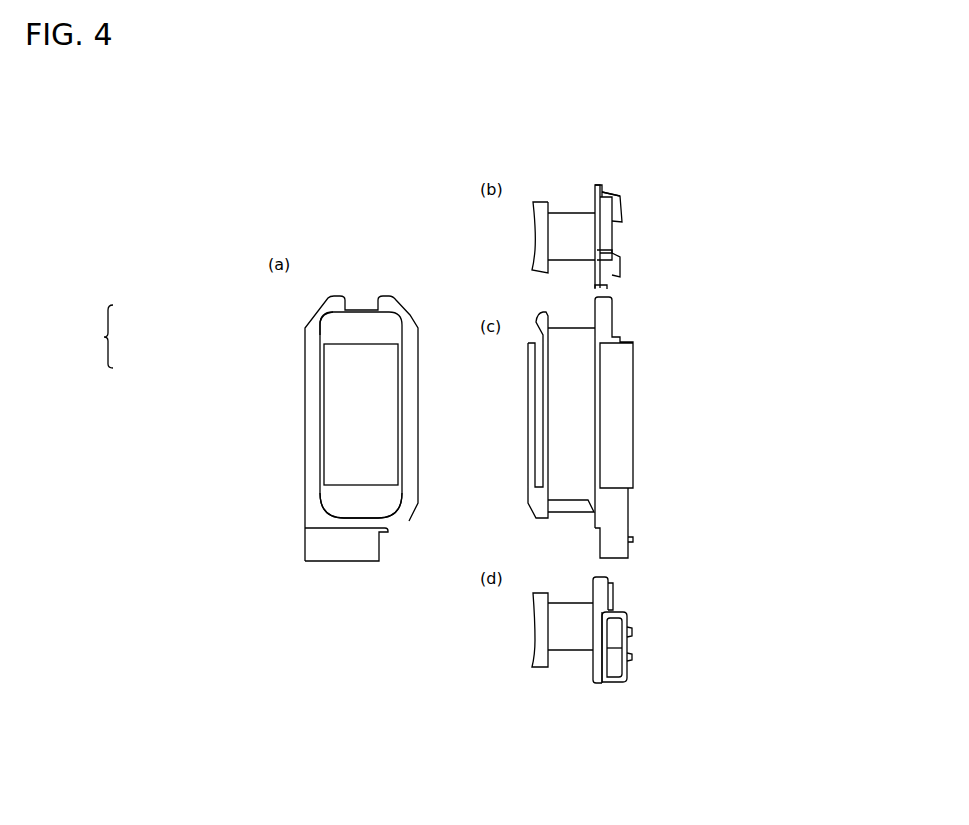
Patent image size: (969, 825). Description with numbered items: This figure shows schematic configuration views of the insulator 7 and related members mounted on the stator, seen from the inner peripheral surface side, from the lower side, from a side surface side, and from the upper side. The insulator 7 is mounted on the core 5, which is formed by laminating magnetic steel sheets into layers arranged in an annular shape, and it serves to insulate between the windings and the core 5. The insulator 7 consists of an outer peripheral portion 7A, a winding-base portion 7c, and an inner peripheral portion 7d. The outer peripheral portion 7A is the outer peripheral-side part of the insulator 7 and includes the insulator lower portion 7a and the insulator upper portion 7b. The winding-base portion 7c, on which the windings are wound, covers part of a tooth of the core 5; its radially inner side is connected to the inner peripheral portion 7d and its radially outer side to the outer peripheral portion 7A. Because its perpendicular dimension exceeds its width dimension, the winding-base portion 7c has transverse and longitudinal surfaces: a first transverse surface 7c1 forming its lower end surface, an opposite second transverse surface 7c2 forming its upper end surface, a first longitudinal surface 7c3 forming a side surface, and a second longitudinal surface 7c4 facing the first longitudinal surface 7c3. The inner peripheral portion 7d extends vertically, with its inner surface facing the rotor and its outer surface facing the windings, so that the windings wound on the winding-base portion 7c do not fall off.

The outer peripheral portion 7A is at (93, 336).
The insulator 7 is at (305, 405).
The insulator lower portion 7a is at (322, 311).
The insulator upper portion 7b is at (318, 517).
The core 5 is at (347, 423).
The inner peripheral portion 7d is at (337, 332).
The winding-base portion 7c is at (577, 418).
The first transverse surface 7c1 is at (575, 223).
The second transverse surface 7c2 is at (582, 640).
The first longitudinal surface 7c3 is at (603, 283).
The second longitudinal surface 7c4 is at (602, 192).